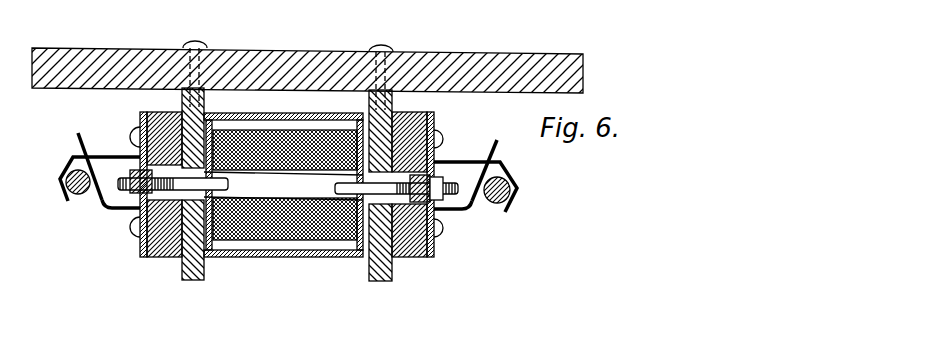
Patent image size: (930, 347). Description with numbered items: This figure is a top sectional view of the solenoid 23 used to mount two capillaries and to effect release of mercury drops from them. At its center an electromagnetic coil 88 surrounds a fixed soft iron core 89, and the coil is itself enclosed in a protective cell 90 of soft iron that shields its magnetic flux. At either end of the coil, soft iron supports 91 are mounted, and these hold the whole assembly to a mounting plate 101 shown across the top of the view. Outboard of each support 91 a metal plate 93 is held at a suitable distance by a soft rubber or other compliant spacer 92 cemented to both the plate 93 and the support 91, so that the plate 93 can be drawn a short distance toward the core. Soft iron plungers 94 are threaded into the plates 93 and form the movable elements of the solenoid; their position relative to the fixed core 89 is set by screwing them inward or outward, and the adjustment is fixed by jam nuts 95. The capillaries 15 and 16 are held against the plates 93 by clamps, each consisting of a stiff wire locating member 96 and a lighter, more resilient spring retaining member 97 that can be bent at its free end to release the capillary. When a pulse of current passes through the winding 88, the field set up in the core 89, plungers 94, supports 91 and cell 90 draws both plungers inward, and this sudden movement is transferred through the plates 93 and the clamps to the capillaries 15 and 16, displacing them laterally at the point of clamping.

The mounting plate 101 is at (305, 50).
The soft iron supports 91 is at (193, 281).
The protective cell 90 is at (320, 258).
The electromagnetic coil 88 is at (258, 238).
The fixed soft iron core 89 is at (289, 195).
The soft iron plungers 94 is at (230, 184).
The compliant spacers 92 is at (160, 258).
The metal plates 93 is at (140, 256).
The jam nuts 95 is at (129, 176).
The locating member 96 is at (65, 165).
The spring retaining member 97 is at (85, 134).
The capillary 15 is at (80, 196).
The capillary 16 is at (493, 204).
The solenoid 23 is at (259, 290).